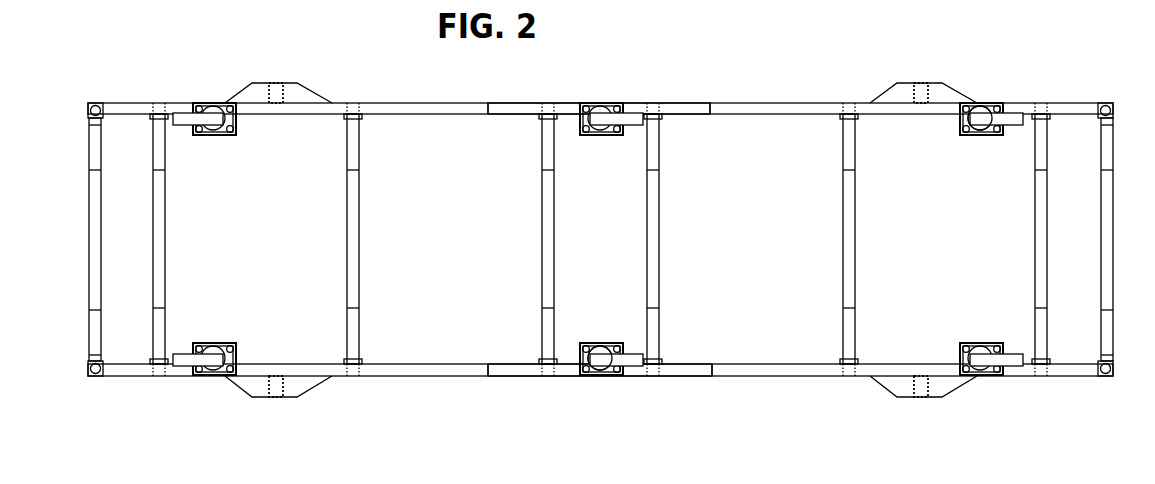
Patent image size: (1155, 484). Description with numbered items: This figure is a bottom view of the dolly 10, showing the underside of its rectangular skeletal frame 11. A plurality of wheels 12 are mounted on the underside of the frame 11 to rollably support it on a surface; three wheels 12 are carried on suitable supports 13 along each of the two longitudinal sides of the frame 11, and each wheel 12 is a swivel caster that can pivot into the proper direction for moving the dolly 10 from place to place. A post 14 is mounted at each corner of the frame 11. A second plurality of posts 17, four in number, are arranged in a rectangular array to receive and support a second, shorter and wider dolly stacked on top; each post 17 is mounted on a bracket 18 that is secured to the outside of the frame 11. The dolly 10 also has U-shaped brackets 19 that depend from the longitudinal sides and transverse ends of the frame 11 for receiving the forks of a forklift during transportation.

The dolly 10 is at (825, 70).
The rectangular skeletal frame 11 is at (746, 104).
The wheel 12 is at (181, 126).
The support 13 is at (978, 138).
The post 14 is at (88, 104).
The post 17 is at (272, 83).
The bracket 18 is at (312, 97).
The U-shaped bracket 19 is at (510, 103).